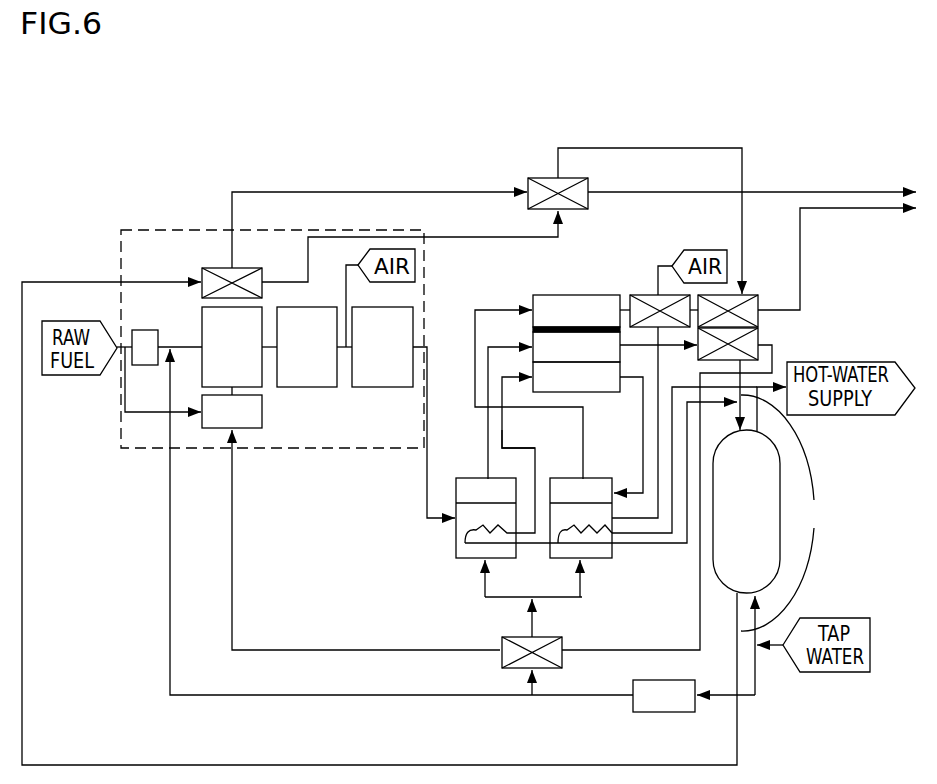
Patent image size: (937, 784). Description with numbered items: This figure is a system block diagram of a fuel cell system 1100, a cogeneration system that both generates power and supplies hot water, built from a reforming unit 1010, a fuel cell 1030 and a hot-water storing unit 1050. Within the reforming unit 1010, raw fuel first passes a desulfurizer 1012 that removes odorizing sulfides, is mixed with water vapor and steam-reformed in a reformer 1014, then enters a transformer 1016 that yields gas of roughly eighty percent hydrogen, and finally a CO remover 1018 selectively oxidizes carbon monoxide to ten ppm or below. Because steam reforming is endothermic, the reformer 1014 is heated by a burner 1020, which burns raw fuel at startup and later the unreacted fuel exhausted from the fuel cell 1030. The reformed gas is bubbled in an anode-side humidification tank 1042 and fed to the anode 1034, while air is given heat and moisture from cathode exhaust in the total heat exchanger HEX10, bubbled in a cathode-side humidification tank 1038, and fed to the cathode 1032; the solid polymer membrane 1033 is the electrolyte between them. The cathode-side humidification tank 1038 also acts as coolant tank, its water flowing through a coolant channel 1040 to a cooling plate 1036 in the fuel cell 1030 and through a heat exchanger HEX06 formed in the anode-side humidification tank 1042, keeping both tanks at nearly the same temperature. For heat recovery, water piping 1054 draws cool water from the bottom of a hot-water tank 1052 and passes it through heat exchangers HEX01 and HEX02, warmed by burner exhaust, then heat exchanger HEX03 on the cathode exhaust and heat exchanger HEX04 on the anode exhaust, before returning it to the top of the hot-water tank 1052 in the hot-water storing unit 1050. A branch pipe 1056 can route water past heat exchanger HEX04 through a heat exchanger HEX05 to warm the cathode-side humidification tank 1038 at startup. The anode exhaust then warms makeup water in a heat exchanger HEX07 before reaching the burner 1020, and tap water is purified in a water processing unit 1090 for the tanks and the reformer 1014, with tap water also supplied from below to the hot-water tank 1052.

The fuel cell system 1100 is at (161, 97).
The reforming unit 1010 is at (318, 449).
The desulfurizer 1012 is at (143, 330).
The reformer 1014 is at (232, 347).
The transformer 1016 is at (307, 347).
The CO remover 1018 is at (382, 347).
The burner 1020 is at (232, 411).
The fuel cell 1030 is at (585, 314).
The cathode 1032 is at (576, 311).
The solid polymer membrane 1033 is at (548, 326).
The anode 1034 is at (576, 347).
The cooling plate 1036 is at (576, 377).
The cathode-side humidification tank 1038 is at (603, 556).
The coolant channel 1040 is at (517, 448).
The anode-side humidification tank 1042 is at (439, 538).
The hot-water storing unit 1050 is at (776, 513).
The hot-water tank 1052 is at (797, 517).
The water piping 1054 is at (22, 566).
The branch pipe 1056 is at (674, 535).
The water processing unit 1090 is at (664, 696).
The heat exchanger HEX01 is at (218, 268).
The heat exchanger HEX02 is at (542, 178).
The heat exchanger HEX03 is at (727, 303).
The heat exchanger HEX04 is at (732, 337).
The heat exchanger HEX05 is at (598, 536).
The heat exchanger HEX06 is at (470, 559).
The heat exchanger HEX07 is at (503, 640).
The total heat exchanger HEX10 is at (641, 295).